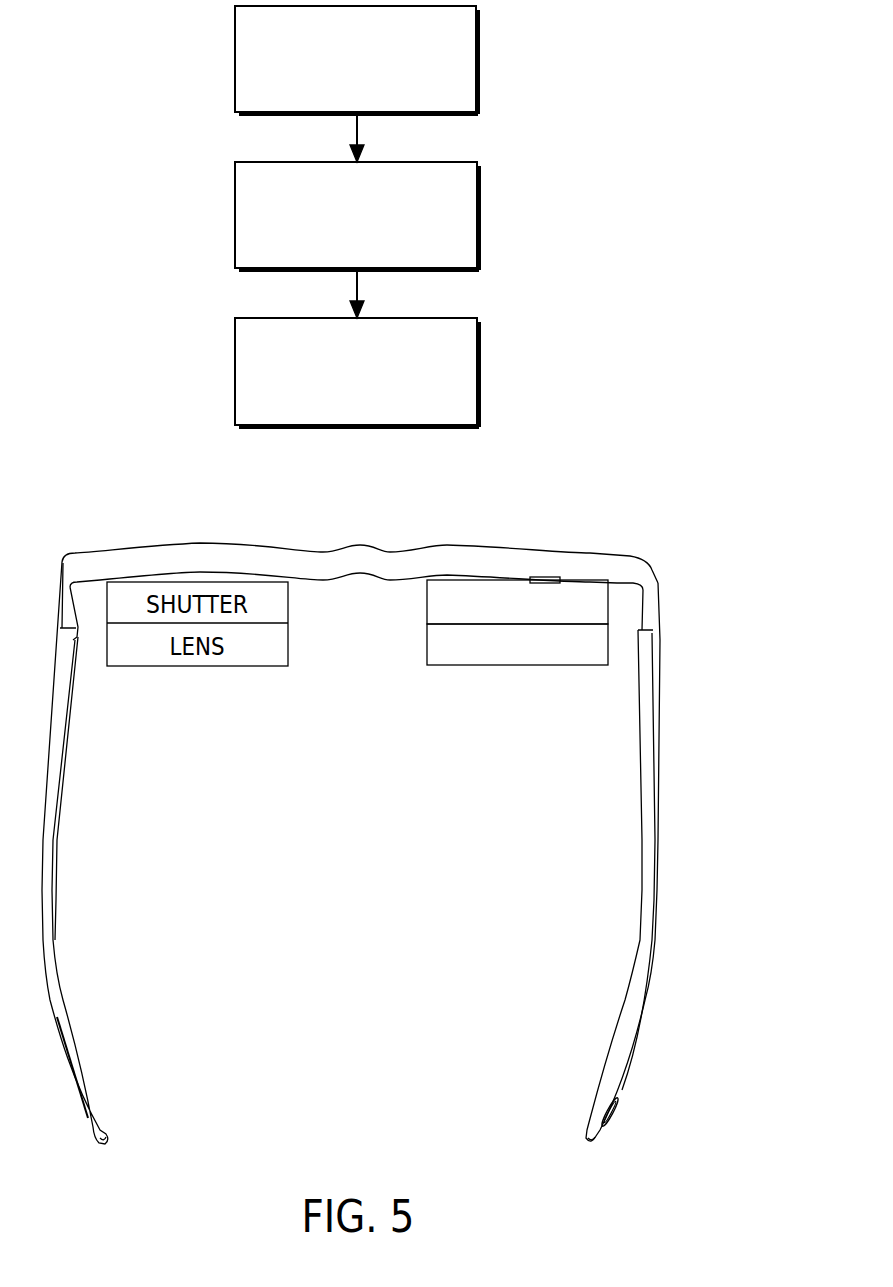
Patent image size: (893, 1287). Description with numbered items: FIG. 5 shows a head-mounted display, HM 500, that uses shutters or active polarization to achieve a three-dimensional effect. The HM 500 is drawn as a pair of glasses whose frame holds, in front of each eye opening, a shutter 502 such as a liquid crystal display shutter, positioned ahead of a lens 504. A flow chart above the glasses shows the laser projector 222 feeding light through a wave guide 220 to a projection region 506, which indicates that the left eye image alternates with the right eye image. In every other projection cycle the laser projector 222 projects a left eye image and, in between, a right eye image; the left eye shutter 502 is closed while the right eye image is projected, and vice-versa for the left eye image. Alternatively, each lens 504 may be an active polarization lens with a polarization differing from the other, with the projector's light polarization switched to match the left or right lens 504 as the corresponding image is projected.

The laser projector 222 is at (235, 58).
The wave guide 220 is at (235, 214).
The projection region 506 is at (235, 373).
The HM 500 is at (683, 720).
The shutter 502 is at (520, 581).
The lens 504 is at (515, 665).